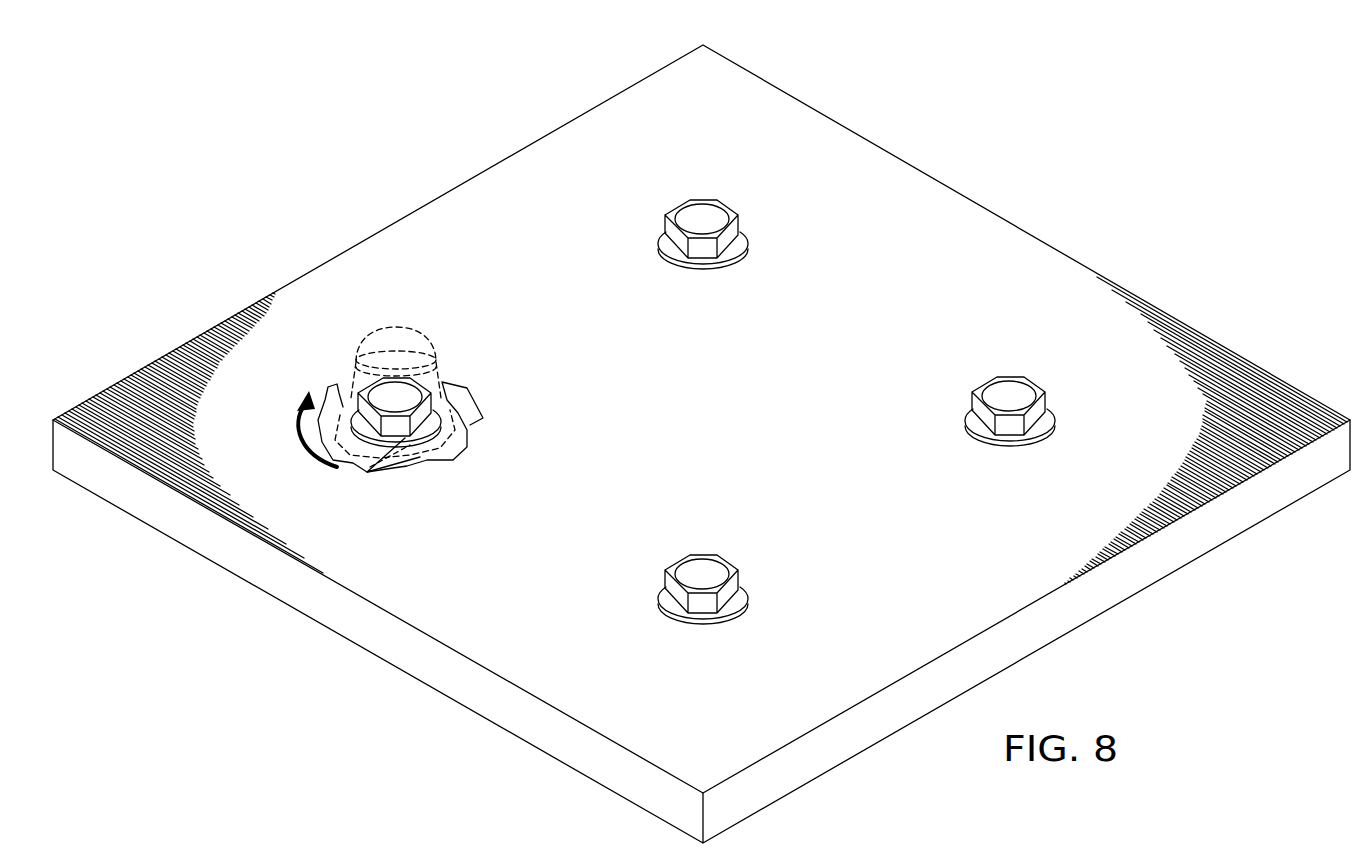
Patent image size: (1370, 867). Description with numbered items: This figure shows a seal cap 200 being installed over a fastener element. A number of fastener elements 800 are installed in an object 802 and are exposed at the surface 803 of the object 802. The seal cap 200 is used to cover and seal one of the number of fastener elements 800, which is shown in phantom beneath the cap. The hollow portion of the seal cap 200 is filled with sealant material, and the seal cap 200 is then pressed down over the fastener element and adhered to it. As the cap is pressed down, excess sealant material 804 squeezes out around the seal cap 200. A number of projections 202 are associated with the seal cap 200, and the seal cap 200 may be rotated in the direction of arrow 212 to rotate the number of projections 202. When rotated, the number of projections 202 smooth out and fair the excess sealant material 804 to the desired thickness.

The number of fastener elements 800 is at (707, 192).
The object 802 is at (1028, 232).
The surface 803 is at (724, 437).
The seal cap 200 is at (416, 318).
The number of projections 202 is at (488, 358).
The arrow 212 is at (303, 437).
The excess sealant material 804 is at (476, 456).